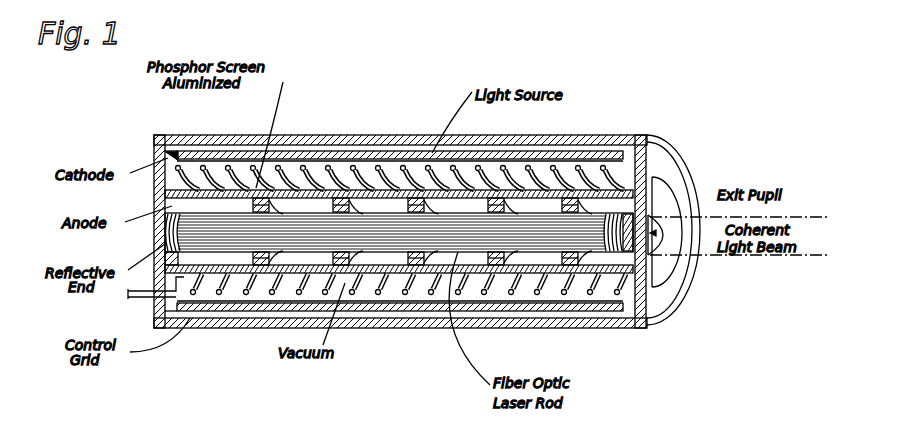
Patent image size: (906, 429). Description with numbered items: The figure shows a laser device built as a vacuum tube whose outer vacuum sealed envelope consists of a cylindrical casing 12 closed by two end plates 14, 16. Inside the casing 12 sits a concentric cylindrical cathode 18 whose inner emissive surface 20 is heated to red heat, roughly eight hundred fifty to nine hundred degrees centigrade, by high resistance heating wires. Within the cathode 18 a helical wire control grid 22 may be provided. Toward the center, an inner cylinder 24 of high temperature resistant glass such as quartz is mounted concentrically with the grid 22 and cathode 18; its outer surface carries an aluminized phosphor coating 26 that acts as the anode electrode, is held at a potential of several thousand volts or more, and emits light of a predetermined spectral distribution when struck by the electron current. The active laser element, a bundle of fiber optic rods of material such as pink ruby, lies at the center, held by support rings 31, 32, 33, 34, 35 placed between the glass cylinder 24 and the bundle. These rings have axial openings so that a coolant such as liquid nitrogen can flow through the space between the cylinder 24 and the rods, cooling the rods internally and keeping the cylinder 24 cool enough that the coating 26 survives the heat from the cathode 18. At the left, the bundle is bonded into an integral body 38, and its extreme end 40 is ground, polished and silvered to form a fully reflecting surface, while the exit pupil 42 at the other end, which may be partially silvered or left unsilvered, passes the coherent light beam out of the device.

The cylindrical casing 12 is at (563, 142).
The end plate 14 is at (655, 150).
The end plate 16 is at (157, 160).
The cylindrical cathode 18 is at (372, 153).
The emissive surface 20 is at (392, 163).
The control grid 22 is at (303, 168).
The inner cylinder 24 is at (170, 191).
The aluminized phosphor coating 26 is at (168, 181).
The support ring 31 is at (560, 263).
The support ring 32 is at (463, 273).
The support ring 33 is at (404, 260).
The support ring 34 is at (297, 327).
The support ring 35 is at (252, 264).
The integral body 38 is at (172, 262).
The extreme end 40 is at (160, 232).
The exit pupil 42 is at (652, 262).